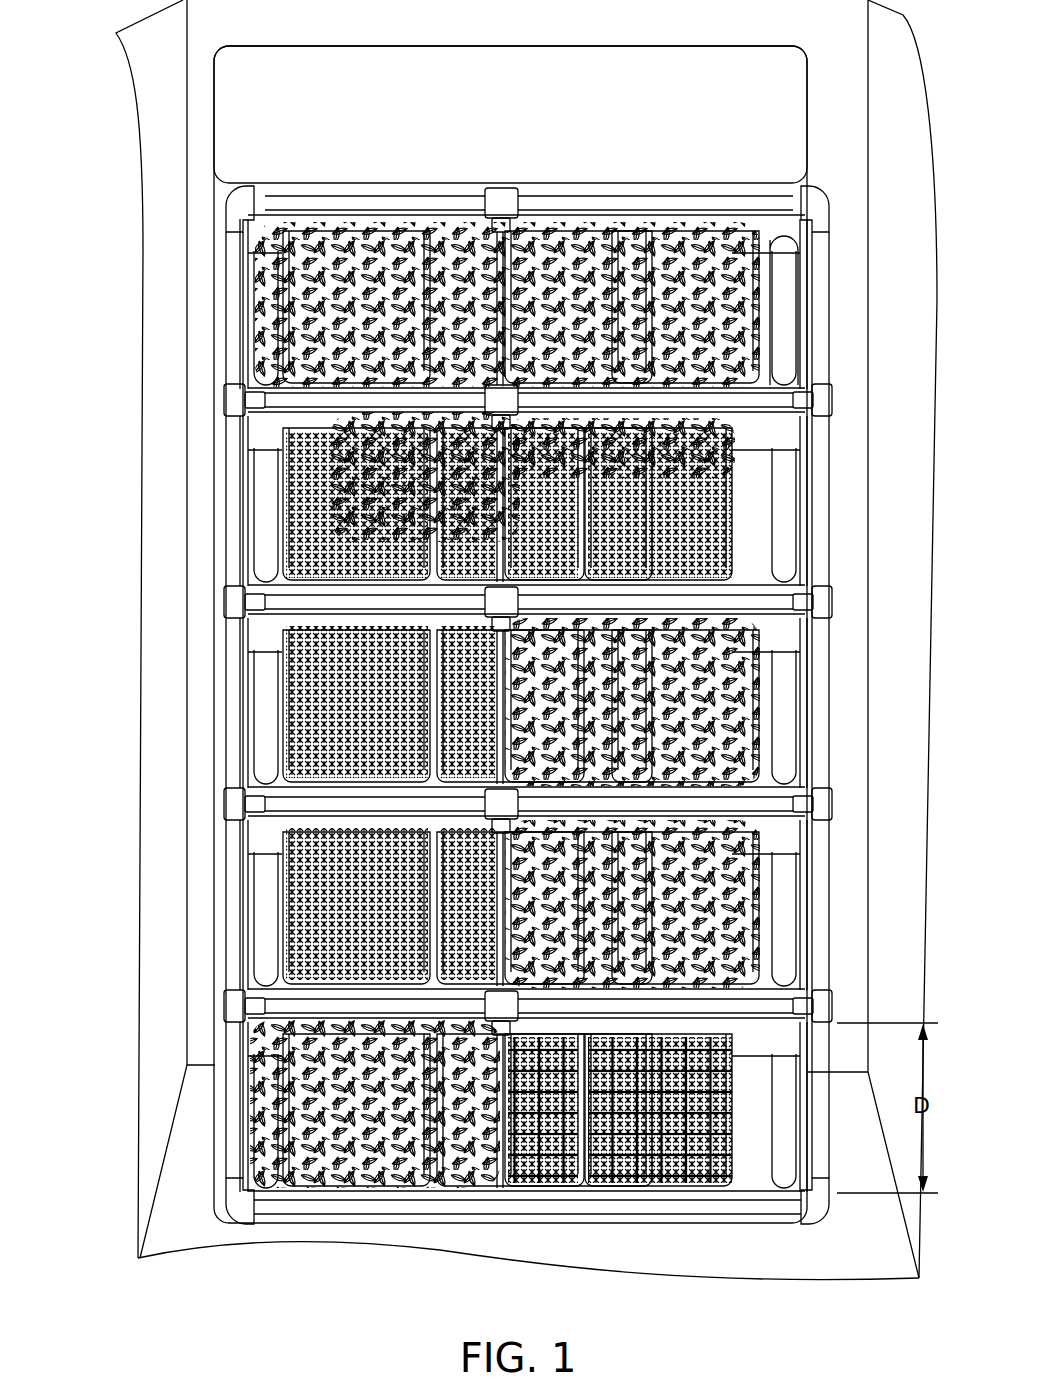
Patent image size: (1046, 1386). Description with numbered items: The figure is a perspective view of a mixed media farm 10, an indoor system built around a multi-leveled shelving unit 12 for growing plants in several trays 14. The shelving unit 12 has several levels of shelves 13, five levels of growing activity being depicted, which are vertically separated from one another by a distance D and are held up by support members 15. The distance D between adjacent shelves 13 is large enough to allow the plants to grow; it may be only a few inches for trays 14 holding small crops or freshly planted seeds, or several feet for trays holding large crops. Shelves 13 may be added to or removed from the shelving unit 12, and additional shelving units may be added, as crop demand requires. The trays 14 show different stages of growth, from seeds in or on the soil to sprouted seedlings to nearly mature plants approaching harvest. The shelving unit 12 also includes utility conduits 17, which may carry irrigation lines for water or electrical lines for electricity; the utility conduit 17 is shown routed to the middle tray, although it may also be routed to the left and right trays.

The mixed media farm 10 is at (116, 62).
The shelving unit 12 is at (848, 574).
The shelves 13 is at (745, 1170).
The trays 14 is at (402, 1190).
The support members 15 is at (780, 336).
The utility conduits 17 is at (518, 250).